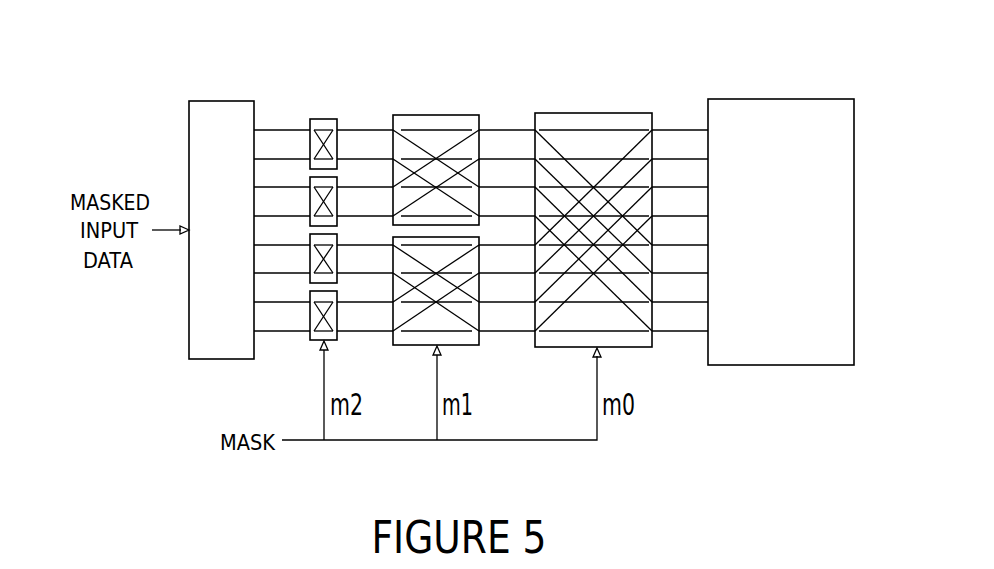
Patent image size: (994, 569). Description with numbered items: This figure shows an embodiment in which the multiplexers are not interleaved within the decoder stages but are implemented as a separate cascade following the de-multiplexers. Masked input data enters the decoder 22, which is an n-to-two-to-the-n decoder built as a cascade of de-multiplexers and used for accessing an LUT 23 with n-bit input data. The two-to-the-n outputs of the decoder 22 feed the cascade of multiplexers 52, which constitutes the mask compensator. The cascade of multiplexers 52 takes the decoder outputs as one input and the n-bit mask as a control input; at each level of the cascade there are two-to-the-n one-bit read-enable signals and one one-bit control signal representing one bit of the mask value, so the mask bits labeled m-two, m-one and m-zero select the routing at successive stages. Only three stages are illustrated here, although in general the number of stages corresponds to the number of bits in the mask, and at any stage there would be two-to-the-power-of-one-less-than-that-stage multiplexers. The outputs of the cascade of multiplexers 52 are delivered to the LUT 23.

The decoder 22 is at (221, 230).
The LUT 23 is at (791, 175).
The cascade of multiplexers 52 is at (481, 173).